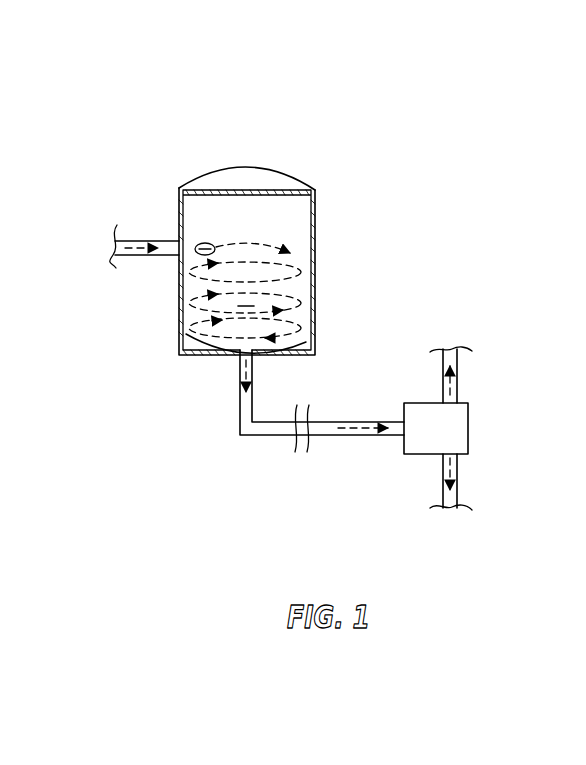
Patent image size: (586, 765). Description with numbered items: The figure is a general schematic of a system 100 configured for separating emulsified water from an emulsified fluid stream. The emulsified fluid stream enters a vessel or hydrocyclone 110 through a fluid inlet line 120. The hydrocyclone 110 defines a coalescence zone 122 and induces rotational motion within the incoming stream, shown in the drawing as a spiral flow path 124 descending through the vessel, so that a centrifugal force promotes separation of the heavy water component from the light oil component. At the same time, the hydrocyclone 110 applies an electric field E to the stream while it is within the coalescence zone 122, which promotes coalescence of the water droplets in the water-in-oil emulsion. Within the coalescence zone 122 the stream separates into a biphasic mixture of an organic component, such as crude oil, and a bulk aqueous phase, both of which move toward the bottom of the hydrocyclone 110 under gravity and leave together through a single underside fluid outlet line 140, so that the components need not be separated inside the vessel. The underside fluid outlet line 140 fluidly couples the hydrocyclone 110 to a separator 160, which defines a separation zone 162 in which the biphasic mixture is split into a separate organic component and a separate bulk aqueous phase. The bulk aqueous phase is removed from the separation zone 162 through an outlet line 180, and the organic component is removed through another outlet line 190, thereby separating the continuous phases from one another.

The system 100 is at (466, 120).
The hydrocyclone 110 is at (214, 176).
The fluid inlet line 120 is at (143, 240).
The coalescence zone 122 is at (232, 226).
The spiral flow path 124 is at (299, 266).
The underside fluid outlet line 140 is at (240, 374).
The separator 160 is at (470, 429).
The separation zone 162 is at (457, 441).
The outlet line 180 is at (457, 483).
The outlet line 190 is at (457, 380).